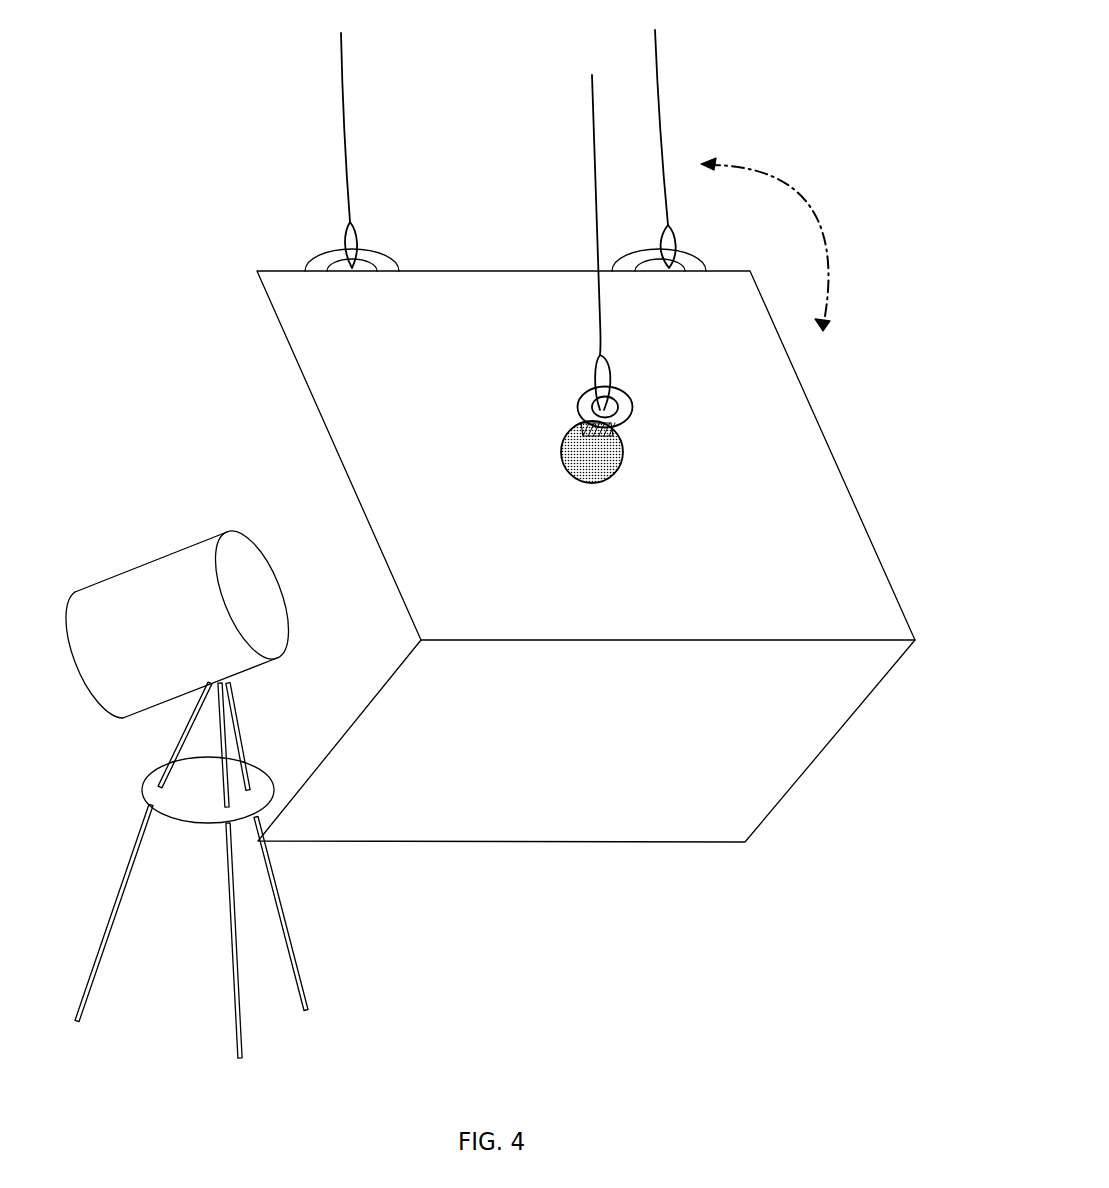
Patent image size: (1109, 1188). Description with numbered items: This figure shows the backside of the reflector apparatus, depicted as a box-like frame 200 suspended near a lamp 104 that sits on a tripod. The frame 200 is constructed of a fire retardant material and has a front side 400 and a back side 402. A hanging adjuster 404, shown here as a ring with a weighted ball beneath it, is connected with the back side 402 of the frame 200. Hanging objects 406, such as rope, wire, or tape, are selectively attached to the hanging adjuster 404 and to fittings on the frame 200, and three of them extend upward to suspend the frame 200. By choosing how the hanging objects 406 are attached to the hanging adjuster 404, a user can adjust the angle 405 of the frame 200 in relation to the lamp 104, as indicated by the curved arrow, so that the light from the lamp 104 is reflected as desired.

The lamp 104 is at (142, 607).
The frame 200 is at (317, 407).
The front side 400 is at (324, 435).
The back side 402 is at (756, 439).
The hanging adjuster 404 is at (577, 402).
The angle 405 is at (810, 197).
The hanging objects 406 is at (592, 205).